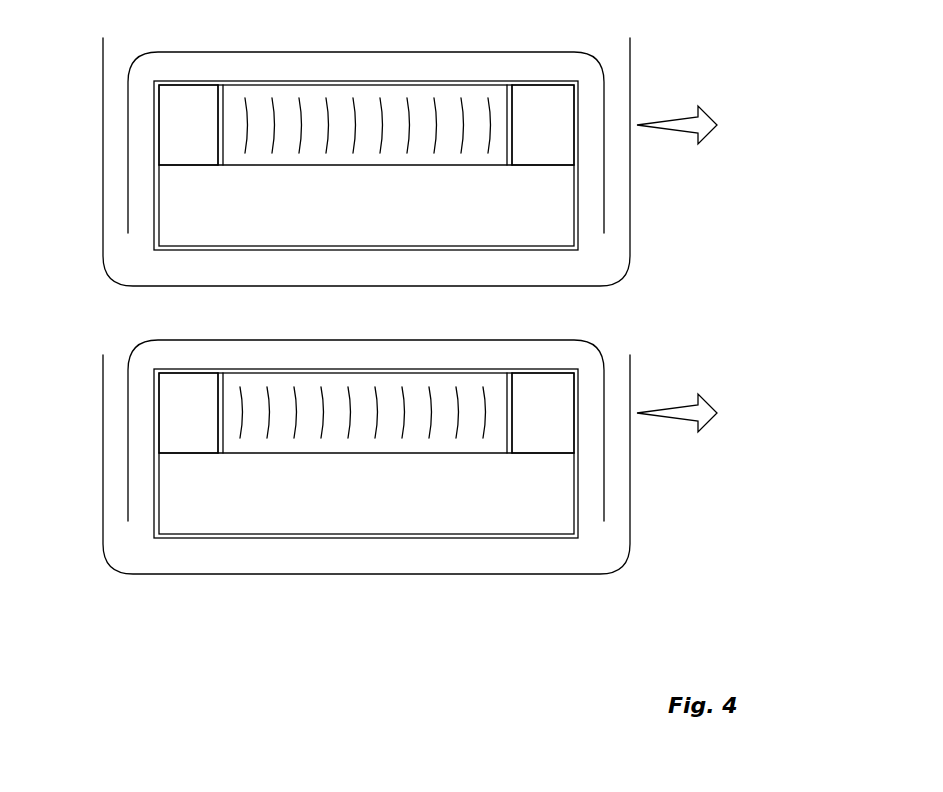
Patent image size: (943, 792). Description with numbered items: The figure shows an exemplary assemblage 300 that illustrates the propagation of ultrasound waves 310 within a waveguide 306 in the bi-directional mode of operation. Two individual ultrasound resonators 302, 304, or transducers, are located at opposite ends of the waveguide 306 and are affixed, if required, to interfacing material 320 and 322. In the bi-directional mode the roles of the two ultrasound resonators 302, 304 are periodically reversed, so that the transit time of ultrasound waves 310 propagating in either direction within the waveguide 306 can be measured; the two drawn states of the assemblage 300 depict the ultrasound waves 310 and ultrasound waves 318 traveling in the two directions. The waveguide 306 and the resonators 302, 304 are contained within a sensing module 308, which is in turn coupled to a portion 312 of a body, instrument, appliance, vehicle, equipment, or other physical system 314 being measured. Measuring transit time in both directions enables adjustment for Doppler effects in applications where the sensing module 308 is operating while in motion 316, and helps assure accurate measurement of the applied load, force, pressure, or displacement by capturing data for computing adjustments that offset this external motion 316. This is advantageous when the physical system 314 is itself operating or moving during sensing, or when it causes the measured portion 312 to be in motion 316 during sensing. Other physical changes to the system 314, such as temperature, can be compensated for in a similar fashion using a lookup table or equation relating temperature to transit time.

The assemblage 300 is at (681, 640).
The ultrasound resonator 302 is at (188, 95).
The ultrasound resonator 304 is at (548, 95).
The waveguide 306 is at (312, 170).
The sensing module 308 is at (168, 198).
The ultrasound waves 310 is at (338, 108).
The portion of the physical system being measured 312 is at (592, 132).
The physical system 314 is at (611, 255).
The motion 316 is at (678, 117).
The liquid in upper chamber (second state) 318 is at (360, 392).
The interfacing material 320 is at (223, 97).
The interfacing material 322 is at (508, 100).